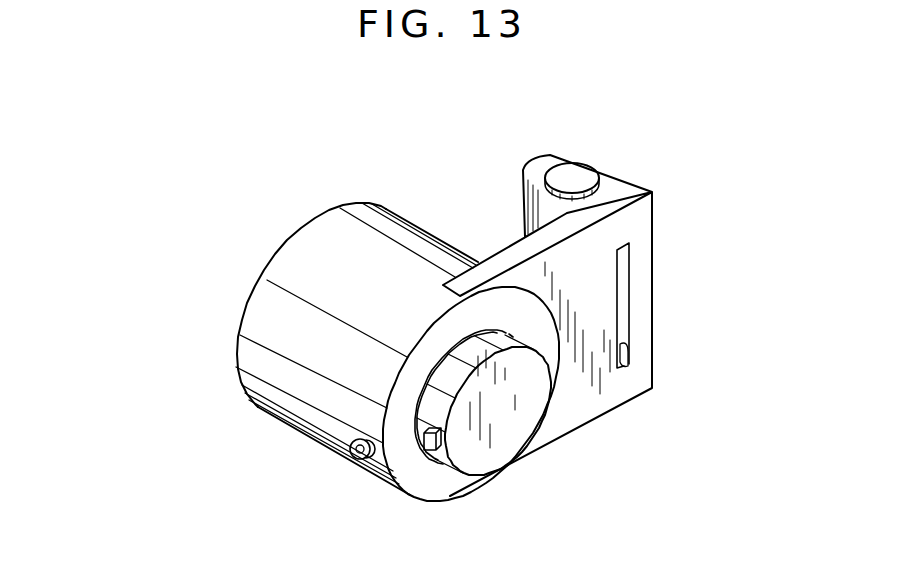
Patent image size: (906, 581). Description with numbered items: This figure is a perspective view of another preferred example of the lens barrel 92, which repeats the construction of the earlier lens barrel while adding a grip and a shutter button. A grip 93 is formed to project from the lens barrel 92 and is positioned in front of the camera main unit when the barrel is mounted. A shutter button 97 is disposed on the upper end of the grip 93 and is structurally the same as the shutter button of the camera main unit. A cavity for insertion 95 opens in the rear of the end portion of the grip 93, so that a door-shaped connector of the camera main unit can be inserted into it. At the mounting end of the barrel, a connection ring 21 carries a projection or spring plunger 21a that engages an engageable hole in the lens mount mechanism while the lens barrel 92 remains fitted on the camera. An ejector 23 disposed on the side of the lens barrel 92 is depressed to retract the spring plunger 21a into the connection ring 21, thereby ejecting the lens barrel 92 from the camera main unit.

The lens barrel 92 is at (264, 222).
The grip 93 is at (620, 190).
The shutter button 97 is at (573, 172).
The cavity for insertion 95 is at (625, 364).
The connection ring 21 is at (503, 442).
The spring plunger 21a is at (417, 446).
The ejector 23 is at (352, 457).